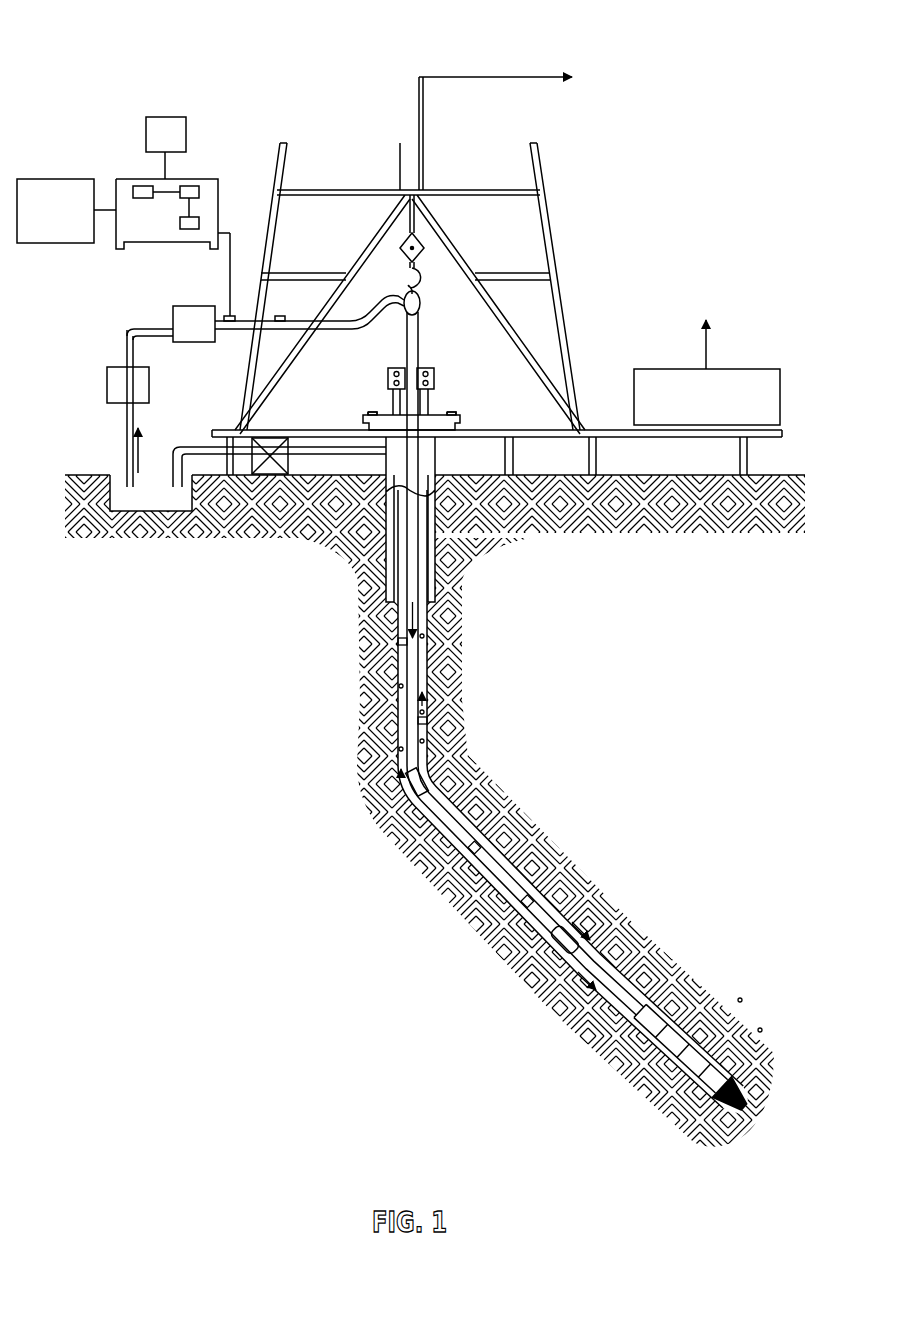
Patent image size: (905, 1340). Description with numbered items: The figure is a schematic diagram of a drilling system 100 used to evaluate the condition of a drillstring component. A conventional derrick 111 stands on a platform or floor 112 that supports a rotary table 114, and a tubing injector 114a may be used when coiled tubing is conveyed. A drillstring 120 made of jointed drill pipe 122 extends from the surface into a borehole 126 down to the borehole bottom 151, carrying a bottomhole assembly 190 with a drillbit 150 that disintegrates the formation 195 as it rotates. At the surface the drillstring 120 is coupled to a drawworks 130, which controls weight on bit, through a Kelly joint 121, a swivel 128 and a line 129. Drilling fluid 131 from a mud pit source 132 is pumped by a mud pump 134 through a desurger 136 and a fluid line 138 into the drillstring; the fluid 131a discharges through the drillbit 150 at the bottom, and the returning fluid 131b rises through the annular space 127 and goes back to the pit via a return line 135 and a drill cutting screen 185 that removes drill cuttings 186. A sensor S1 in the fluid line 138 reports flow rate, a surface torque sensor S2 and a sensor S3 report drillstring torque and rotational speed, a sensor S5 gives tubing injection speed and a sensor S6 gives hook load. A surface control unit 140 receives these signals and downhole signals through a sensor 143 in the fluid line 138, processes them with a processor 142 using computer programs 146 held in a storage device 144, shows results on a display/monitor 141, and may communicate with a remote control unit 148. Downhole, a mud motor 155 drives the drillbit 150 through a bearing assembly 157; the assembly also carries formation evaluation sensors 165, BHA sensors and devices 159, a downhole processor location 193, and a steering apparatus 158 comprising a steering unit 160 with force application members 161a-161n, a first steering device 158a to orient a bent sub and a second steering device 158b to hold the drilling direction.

The drilling system 100 is at (100, 44).
The derrick 111 is at (562, 290).
The platform or floor 112 is at (585, 428).
The rotary table 114 is at (435, 415).
The tubing injector 114a is at (434, 378).
The drillstring 120 is at (430, 684).
The Kelly joint 121 is at (418, 352).
The drill pipe 122 is at (402, 672).
The borehole 126 is at (427, 743).
The annular space 127 is at (447, 800).
The swivel 128 is at (402, 303).
The line 129 is at (423, 170).
The drawworks 130 is at (720, 368).
The drilling fluid 131 is at (118, 500).
The drilling fluid from the drilling tubular 131a is at (405, 625).
The returning drilling fluid 131b is at (407, 767).
The source of drilling fluid 132 is at (130, 507).
The mud pump 134 is at (107, 385).
The return line 135 is at (333, 455).
The desurger 136 is at (170, 318).
The fluid line 138 is at (245, 338).
The surface control unit 140 is at (143, 183).
The display/monitor 141 is at (165, 117).
The processor 142 is at (140, 186).
The sensor 143 is at (228, 316).
The storage device 144 is at (192, 186).
The computer programs 146 is at (186, 229).
The remote control unit 148 is at (72, 179).
The drillbit 150 is at (750, 1080).
The borehole bottom 151 is at (708, 1145).
The downhole motor 155 is at (493, 860).
The bearing assembly 157 is at (695, 1060).
The steering apparatus 158 is at (695, 1052).
The first steering device 158a is at (690, 1123).
The second steering device 158b is at (680, 1100).
The sensors and devices 159 is at (720, 1072).
The steering unit 160 is at (662, 1080).
The force application members 161a-161n is at (742, 990).
The formation evaluation sensors 165 is at (597, 1013).
The drill cutting screen 185 is at (268, 438).
The drill cuttings 186 is at (435, 632).
The bottomhole assembly 190 is at (600, 942).
The downhole processor location 193 is at (563, 980).
The formation 195 is at (645, 858).
The sensor S1 is at (281, 316).
The surface torque sensor S2 is at (460, 417).
The sensor S3 is at (368, 413).
The sensor S5 is at (420, 318).
The sensor S6 is at (414, 290).